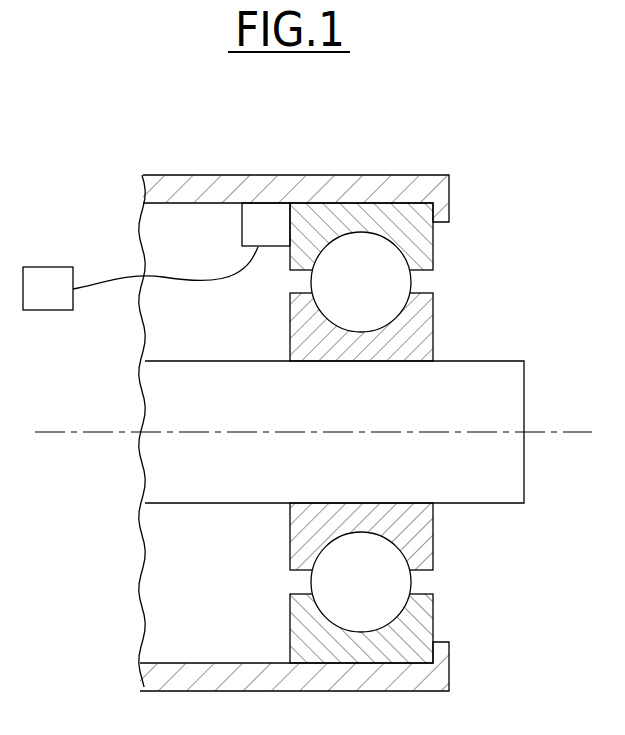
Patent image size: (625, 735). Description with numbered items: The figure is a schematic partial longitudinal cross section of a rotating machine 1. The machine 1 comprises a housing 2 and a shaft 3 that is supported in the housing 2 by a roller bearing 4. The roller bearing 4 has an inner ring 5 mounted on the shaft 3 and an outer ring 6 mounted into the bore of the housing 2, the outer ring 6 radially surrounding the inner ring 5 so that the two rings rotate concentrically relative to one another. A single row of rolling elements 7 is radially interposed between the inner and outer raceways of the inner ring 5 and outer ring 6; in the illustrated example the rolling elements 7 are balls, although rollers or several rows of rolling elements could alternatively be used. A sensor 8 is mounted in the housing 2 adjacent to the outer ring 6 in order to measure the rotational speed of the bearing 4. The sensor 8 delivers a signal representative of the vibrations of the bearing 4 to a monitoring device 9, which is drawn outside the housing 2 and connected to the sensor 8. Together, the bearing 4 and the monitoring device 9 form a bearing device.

The machine 1 is at (317, 148).
The housing 2 is at (430, 182).
The shaft 3 is at (518, 402).
The roller bearing 4 is at (396, 433).
The inner ring 5 is at (433, 323).
The outer ring 6 is at (433, 233).
The rolling elements 7 is at (368, 294).
The sensor 8 is at (266, 224).
The monitoring device 9 is at (140, 278).